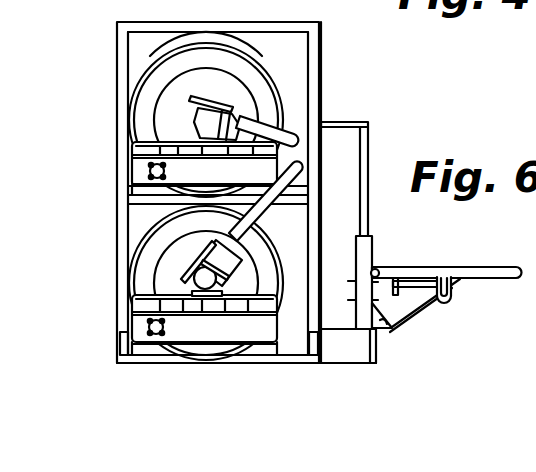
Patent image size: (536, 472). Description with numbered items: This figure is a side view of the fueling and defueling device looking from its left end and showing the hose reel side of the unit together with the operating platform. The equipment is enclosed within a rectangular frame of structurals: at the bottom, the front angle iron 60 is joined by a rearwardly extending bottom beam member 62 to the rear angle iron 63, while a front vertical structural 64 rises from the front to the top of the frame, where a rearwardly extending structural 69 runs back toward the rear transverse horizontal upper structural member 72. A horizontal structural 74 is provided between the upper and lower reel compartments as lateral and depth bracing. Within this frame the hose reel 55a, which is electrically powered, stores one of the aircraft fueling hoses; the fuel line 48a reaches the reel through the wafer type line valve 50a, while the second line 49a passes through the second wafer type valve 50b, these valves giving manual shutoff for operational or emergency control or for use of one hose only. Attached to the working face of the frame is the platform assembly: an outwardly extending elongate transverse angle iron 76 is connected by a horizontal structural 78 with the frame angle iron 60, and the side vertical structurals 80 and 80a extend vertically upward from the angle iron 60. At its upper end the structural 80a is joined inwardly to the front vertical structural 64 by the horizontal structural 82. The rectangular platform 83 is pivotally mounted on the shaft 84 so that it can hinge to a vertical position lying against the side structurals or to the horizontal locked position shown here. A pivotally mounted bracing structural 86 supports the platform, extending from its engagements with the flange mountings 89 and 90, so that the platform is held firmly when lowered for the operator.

The rear transverse horizontal upper structural member 72 is at (116, 22).
The rearwardly extending structural 69 is at (162, 22).
The reel 55a is at (208, 49).
The front vertical structural 64 is at (320, 57).
The valve 50a is at (248, 114).
The line 48a is at (289, 136).
The horizontal structural 82 is at (362, 122).
The side vertical structural 80a is at (368, 159).
The line 49a is at (300, 188).
The horizontal structural 74 is at (137, 211).
The valve 50b is at (136, 270).
The side vertical structural 80 is at (368, 250).
The rectangular platform 83 is at (446, 270).
The shaft 84 is at (357, 275).
The flange mounting 90 is at (457, 289).
The bracing structural 86 is at (430, 308).
The flange mounting 89 is at (396, 330).
The outwardly extending elongate transverse angle iron 76 is at (377, 348).
The horizontal structural 78 is at (350, 364).
The front angle iron 60 is at (332, 365).
The rear angle iron 63 is at (117, 353).
The bottom beam member 62 is at (227, 358).